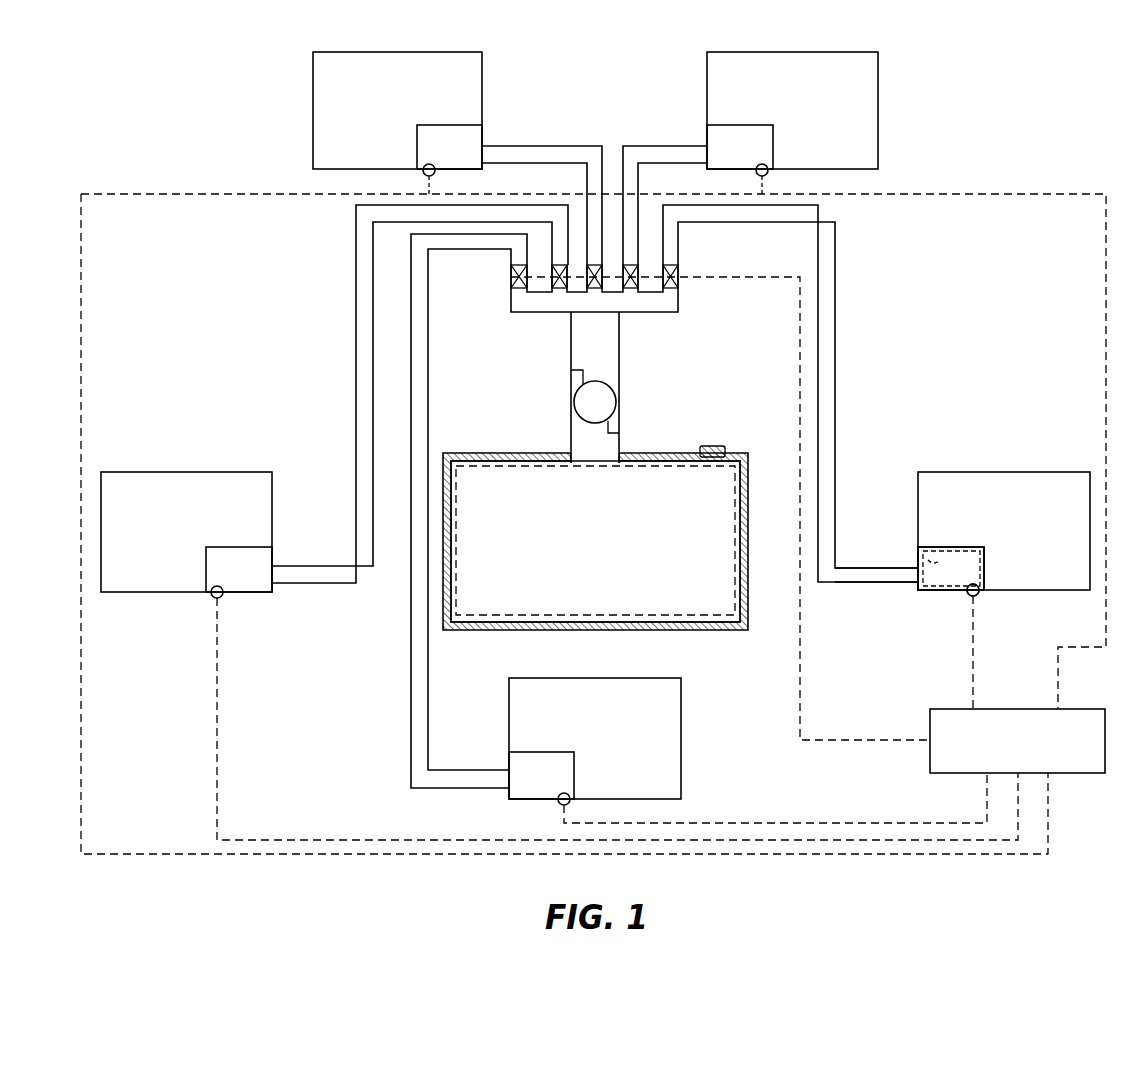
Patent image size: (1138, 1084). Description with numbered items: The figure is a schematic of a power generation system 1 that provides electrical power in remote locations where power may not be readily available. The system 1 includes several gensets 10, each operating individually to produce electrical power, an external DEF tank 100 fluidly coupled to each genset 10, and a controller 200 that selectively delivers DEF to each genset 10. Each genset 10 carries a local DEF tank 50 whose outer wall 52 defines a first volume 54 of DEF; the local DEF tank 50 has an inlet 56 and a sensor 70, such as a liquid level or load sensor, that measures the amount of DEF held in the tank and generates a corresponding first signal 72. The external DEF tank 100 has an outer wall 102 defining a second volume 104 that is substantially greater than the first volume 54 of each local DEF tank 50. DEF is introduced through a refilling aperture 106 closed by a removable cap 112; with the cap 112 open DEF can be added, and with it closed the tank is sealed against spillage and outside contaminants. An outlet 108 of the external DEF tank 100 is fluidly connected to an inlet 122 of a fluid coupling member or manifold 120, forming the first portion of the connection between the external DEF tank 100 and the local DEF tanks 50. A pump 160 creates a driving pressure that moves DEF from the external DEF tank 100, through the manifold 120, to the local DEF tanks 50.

The power generation system 1 is at (1049, 118).
The genset 10 is at (299, 101).
The local DEF tank 50 is at (952, 570).
The outer wall 52 is at (953, 592).
The first volume 54 is at (932, 562).
The inlet 56 is at (918, 572).
The sensor 70 is at (979, 596).
The first signal 72 is at (971, 675).
The external DEF tank 100 is at (618, 540).
The outer wall 102 is at (663, 450).
The second volume 104 is at (480, 482).
The refilling aperture 106 is at (715, 462).
The outlet 108 is at (595, 457).
The removable cap 112 is at (711, 445).
The manifold 120 is at (709, 297).
The inlet 122 is at (601, 335).
The pump 160 is at (598, 390).
The controller 200 is at (1072, 776).